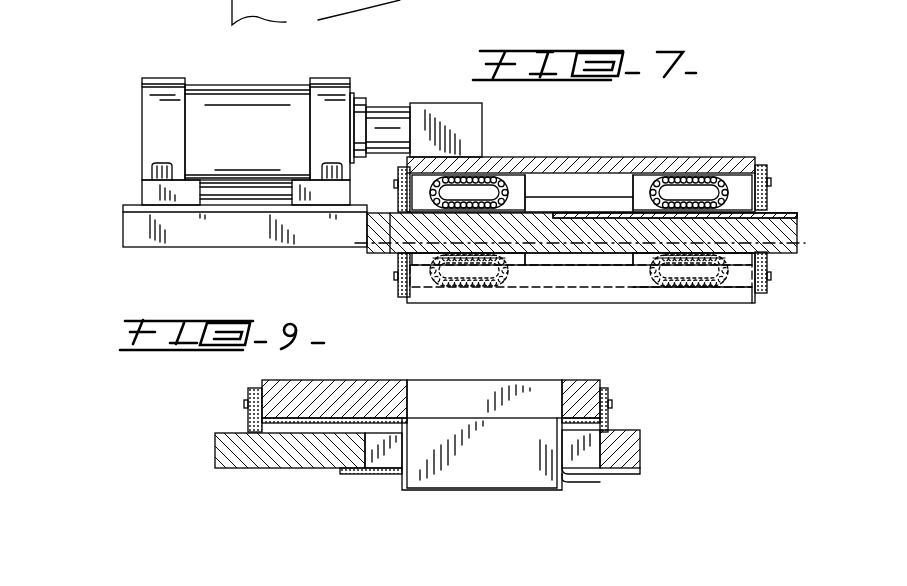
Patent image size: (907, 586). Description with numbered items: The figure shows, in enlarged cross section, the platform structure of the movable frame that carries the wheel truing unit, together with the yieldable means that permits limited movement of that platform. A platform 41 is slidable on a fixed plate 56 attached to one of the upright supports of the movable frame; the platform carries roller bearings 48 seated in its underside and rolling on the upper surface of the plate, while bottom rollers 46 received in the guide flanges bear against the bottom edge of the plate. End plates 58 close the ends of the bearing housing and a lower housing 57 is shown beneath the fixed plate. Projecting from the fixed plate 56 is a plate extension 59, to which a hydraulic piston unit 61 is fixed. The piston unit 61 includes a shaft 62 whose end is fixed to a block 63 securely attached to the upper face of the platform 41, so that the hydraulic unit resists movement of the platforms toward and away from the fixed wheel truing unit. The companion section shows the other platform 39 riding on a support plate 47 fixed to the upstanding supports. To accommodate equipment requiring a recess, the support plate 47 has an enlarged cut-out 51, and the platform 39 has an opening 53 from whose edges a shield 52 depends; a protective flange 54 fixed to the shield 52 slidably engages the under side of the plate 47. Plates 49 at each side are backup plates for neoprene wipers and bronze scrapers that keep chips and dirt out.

In FIG. 7, the hydraulic piston unit 61 is at (235, 118).
In FIG. 7, the shaft 62 is at (390, 118).
In FIG. 7, the block 63 is at (473, 137).
In FIG. 7, the plate extension 59 is at (330, 232).
In FIG. 7, the platform 41 is at (737, 167).
In FIG. 7, the roller bearings 48 is at (502, 185).
In FIG. 7, the bottom rollers 46 is at (508, 263).
In FIG. 7, the end plate 58 is at (393, 173).
In FIG. 7, the fixed plate 56 is at (783, 225).
In FIG. 7, the lower housing 57 is at (718, 292).
In FIG. 9, the platform 39 is at (360, 393).
In FIG. 9, the opening 53 is at (533, 400).
In FIG. 9, the plates 49 is at (250, 422).
In FIG. 9, the support plate 47 is at (633, 448).
In FIG. 9, the cut-out 51 is at (387, 463).
In FIG. 9, the shield 52 is at (553, 467).
In FIG. 9, the protective flange 54 is at (593, 473).